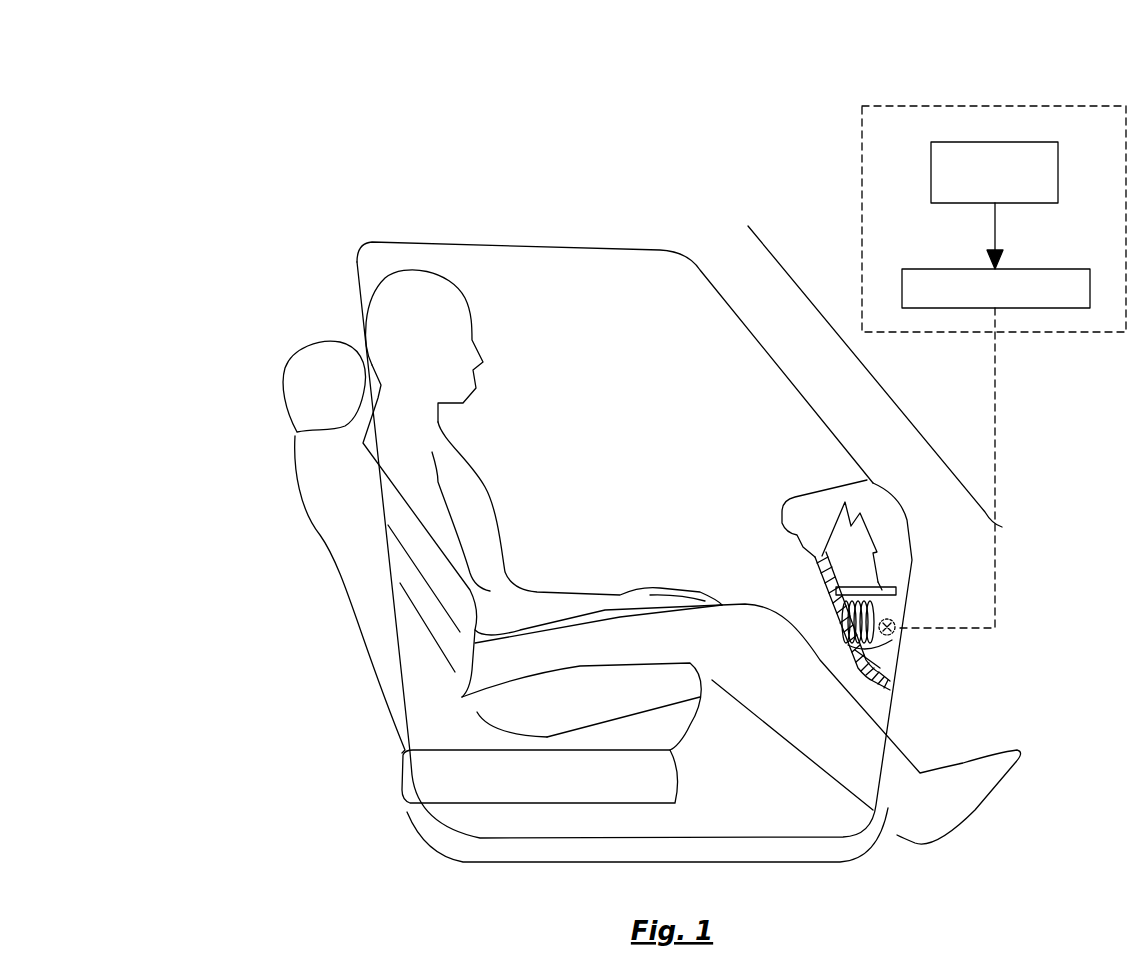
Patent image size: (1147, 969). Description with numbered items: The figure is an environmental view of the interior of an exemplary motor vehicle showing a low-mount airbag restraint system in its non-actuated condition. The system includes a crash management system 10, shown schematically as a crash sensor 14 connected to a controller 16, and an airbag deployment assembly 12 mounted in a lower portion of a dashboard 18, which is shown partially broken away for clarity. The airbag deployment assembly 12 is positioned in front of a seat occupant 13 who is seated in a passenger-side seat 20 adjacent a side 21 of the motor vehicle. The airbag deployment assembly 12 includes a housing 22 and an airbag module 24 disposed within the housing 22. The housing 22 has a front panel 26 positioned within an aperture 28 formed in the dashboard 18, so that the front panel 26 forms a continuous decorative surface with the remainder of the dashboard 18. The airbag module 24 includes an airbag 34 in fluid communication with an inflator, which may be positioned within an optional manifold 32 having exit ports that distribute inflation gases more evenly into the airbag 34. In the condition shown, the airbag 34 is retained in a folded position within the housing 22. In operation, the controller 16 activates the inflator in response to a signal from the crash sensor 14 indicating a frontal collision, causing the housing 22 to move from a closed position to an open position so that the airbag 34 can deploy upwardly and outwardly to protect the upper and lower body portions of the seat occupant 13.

The crash management system 10 is at (994, 333).
The airbag deployment assembly 12 is at (906, 533).
The seat occupant 13 is at (483, 483).
The crash sensor 14 is at (942, 165).
The controller 16 is at (1055, 275).
The dashboard 18 is at (810, 490).
The passenger-side seat 20 is at (330, 515).
The side 21 is at (420, 827).
The housing 22 is at (888, 667).
The airbag module 24 is at (894, 606).
The front panel 26 is at (842, 636).
The aperture 28 is at (843, 658).
The manifold 32 is at (897, 643).
The airbag 34 is at (836, 605).